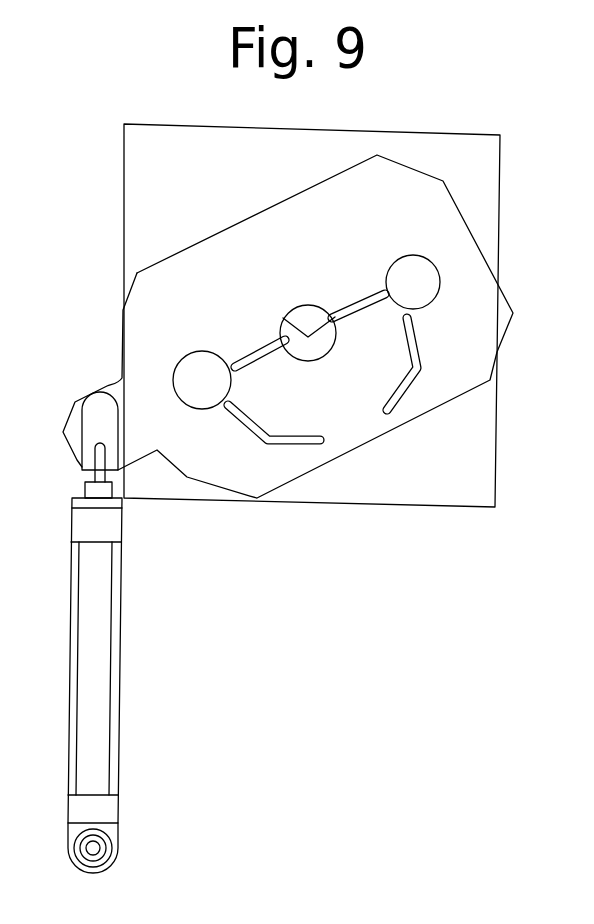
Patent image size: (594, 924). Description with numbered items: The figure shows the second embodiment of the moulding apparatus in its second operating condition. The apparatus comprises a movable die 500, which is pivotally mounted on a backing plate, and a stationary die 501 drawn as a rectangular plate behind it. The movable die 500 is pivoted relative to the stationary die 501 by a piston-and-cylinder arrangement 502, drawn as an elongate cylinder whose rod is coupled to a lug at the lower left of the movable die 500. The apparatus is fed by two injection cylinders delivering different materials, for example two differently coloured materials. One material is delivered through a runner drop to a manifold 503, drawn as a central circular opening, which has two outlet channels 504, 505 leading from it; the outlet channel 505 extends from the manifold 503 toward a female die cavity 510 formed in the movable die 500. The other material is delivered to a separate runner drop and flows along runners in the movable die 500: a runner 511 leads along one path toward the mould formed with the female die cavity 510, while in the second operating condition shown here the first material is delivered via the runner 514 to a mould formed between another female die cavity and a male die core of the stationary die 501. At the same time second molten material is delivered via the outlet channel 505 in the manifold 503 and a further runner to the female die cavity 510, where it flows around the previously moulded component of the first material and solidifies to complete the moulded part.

The movable die 500 is at (490, 347).
The stationary die 501 is at (483, 225).
The piston-and-cylinder arrangement 502 is at (122, 655).
The manifold 503 is at (317, 342).
The outlet channel 504 is at (283, 318).
The outlet channel 505 is at (320, 310).
The female die cavity 510 is at (420, 273).
The runner 511 is at (397, 400).
The runner 514 is at (293, 447).